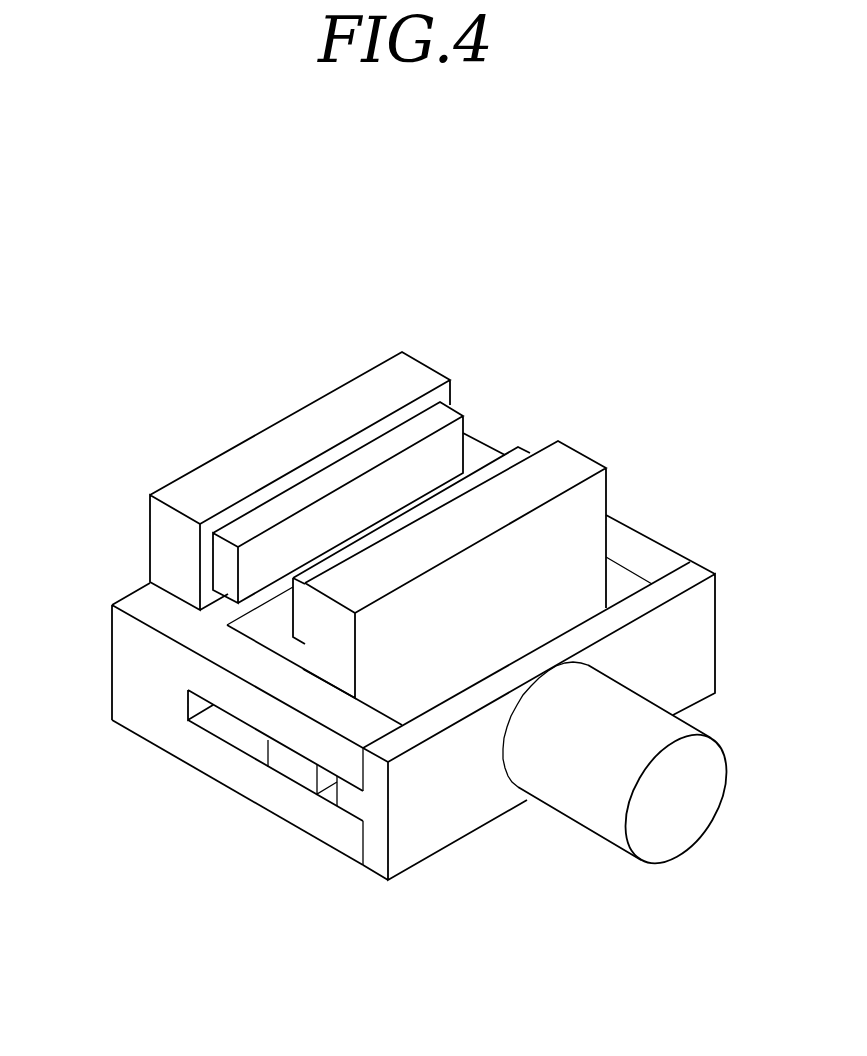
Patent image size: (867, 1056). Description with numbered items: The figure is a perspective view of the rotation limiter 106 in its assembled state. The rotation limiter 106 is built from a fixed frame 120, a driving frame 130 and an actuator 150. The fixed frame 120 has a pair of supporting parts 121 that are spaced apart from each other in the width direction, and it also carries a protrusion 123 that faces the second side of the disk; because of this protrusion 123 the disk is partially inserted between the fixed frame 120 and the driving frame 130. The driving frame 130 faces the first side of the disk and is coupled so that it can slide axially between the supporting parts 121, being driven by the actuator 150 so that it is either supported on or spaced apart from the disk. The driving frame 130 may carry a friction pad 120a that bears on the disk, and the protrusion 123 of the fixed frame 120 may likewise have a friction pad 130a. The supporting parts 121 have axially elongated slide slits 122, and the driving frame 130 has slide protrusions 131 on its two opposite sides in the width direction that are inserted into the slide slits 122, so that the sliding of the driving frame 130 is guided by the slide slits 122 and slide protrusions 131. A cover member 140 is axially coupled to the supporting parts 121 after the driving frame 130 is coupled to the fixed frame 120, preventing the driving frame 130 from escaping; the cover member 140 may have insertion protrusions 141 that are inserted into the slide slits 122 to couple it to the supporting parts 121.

The rotation limiter 106 is at (129, 356).
The fixed frame 120 is at (133, 675).
The friction pad 120a is at (333, 473).
The supporting parts 121 is at (243, 777).
The slide slits 122 is at (240, 733).
The protrusion 123 is at (247, 462).
The driving frame 130 is at (565, 470).
The friction pad 130a is at (513, 455).
The slide protrusions 131 is at (297, 772).
The cover member 140 is at (455, 805).
The insertion protrusions 141 is at (355, 800).
The actuator 150 is at (683, 801).